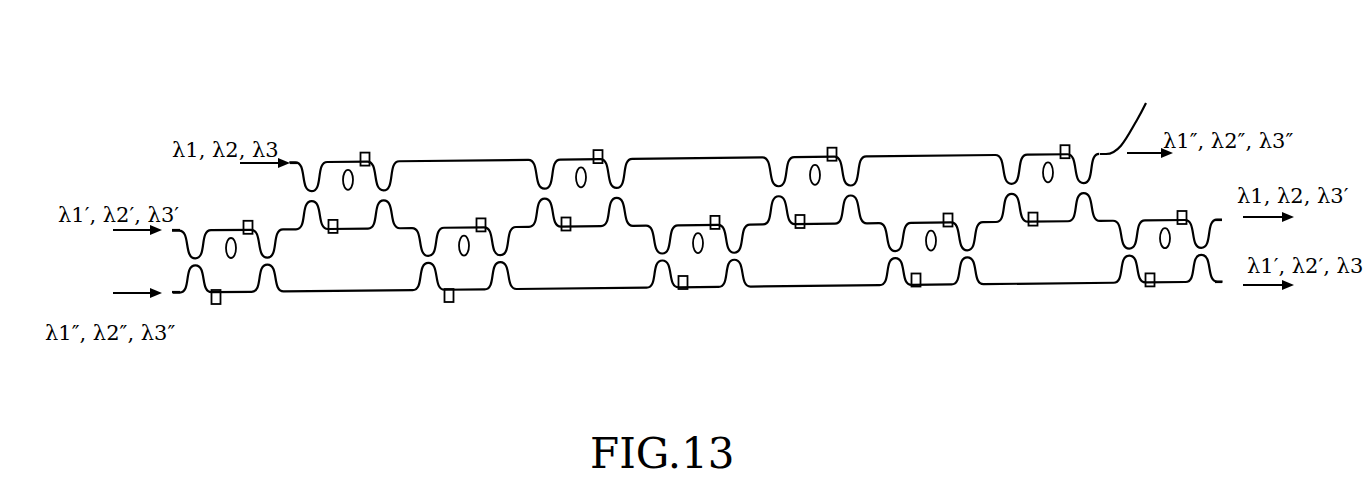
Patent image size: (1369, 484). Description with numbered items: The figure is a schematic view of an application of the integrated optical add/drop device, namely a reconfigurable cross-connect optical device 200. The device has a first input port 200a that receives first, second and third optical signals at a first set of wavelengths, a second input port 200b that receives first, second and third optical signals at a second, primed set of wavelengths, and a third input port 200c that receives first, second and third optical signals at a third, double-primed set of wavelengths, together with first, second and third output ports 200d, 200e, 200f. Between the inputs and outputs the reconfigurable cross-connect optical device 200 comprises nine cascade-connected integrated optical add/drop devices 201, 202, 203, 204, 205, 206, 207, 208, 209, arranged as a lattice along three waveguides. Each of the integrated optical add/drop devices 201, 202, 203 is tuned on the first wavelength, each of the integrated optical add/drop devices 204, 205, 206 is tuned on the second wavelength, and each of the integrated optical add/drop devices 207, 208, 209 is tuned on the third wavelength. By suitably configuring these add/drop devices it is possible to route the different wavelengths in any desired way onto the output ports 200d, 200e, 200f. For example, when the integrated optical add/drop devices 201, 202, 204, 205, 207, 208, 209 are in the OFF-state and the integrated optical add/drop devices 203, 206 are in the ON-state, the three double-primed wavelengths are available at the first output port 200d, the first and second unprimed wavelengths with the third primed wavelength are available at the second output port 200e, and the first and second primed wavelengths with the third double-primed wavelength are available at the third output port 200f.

The reconfigurable cross-connect optical device 200 is at (985, 115).
The first input port 200a is at (301, 178).
The second input port 200b is at (185, 233).
The third input port 200c is at (183, 275).
The first output port 200d is at (1155, 128).
The second output port 200e is at (1216, 219).
The third output port 200f is at (1212, 270).
The integrated optical add/drop device 201 is at (233, 302).
The integrated optical add/drop device 202 is at (337, 163).
The integrated optical add/drop device 203 is at (477, 297).
The integrated optical add/drop device 204 is at (573, 160).
The integrated optical add/drop device 205 is at (697, 290).
The integrated optical add/drop device 206 is at (833, 150).
The integrated optical add/drop device 207 is at (938, 285).
The integrated optical add/drop device 208 is at (1036, 152).
The integrated optical add/drop device 209 is at (1165, 287).